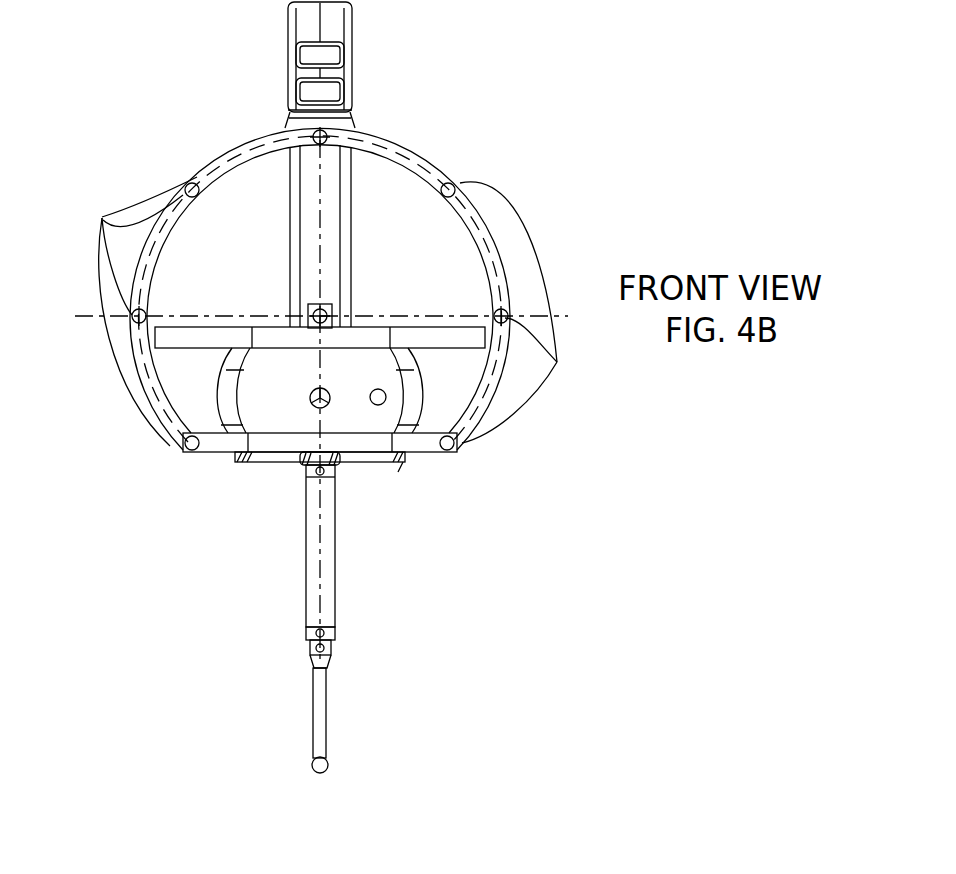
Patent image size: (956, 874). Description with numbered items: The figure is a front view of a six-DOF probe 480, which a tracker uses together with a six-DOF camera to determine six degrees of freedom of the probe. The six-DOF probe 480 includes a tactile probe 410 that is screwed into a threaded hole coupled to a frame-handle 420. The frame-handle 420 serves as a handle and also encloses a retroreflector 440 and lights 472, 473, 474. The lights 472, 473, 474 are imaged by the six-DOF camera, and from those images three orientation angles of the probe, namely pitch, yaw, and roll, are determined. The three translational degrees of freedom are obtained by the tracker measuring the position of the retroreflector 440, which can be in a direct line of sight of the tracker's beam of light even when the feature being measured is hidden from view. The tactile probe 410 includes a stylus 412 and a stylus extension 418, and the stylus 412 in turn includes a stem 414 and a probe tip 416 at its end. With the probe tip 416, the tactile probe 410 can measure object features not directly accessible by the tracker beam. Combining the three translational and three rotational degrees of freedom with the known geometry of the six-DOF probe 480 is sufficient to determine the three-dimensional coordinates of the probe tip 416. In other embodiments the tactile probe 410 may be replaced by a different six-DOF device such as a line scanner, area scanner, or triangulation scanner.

The six-DOF probe 480 is at (486, 77).
The light 472 is at (341, 311).
The frame-handle 420 is at (290, 228).
The light 473 is at (313, 307).
The light 474 is at (385, 405).
The retroreflector 440 is at (313, 406).
The tactile probe 410 is at (108, 617).
The stylus extension 418 is at (335, 575).
The stylus 412 is at (295, 720).
The stem 414 is at (327, 718).
The probe tip 416 is at (328, 760).